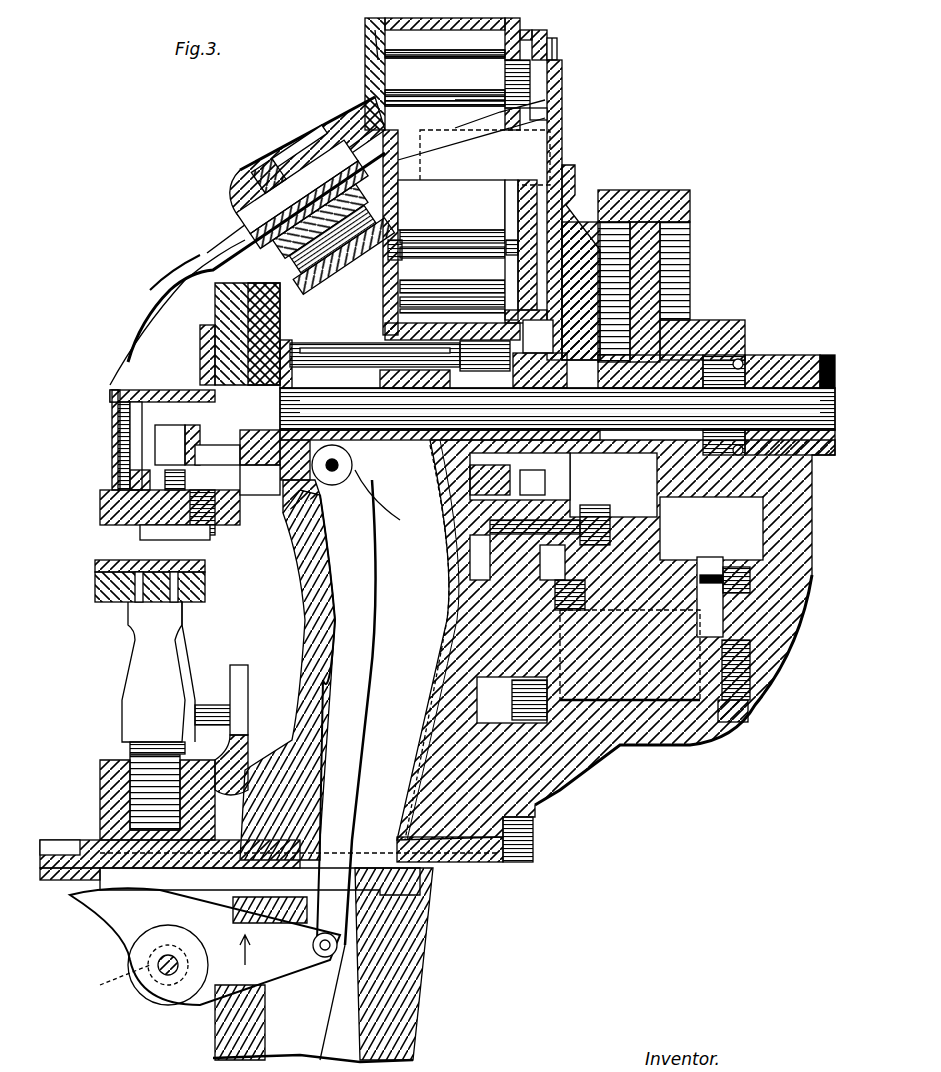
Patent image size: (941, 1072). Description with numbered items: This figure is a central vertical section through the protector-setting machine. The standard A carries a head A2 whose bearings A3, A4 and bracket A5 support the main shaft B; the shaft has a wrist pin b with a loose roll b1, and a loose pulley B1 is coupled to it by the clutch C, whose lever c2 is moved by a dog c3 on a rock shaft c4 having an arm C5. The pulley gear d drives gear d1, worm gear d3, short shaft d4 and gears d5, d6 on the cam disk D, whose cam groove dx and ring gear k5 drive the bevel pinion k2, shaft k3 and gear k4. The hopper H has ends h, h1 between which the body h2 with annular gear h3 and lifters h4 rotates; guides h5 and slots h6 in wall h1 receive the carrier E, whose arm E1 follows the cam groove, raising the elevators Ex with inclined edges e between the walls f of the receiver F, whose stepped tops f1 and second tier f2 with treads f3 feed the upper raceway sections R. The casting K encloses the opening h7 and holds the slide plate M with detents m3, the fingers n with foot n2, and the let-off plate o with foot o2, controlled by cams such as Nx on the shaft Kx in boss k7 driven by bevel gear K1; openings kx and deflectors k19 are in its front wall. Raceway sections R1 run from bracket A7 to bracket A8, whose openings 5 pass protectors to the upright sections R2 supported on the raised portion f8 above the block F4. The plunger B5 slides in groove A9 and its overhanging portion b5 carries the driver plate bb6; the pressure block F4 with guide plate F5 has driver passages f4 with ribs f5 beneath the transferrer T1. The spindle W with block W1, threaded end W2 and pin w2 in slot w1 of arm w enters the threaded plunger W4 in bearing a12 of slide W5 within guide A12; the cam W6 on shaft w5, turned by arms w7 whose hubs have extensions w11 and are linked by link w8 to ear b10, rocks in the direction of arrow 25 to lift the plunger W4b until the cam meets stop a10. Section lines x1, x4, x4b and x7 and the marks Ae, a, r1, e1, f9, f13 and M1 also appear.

The hopper H is at (372, 22).
The stationary upright end h is at (375, 52).
The lifters h4 is at (408, 98).
The cylindrical hopper body h2 is at (450, 26).
The tread portions f3 is at (497, 118).
The opening h7 is at (372, 130).
The annular gear h3 is at (535, 21).
The rear end wall h1 is at (540, 36).
The guides h5 is at (552, 40).
The vertical slots h6 is at (553, 52).
The carrier E is at (560, 100).
The upright separated walls f is at (548, 118).
The depending arm E1 is at (590, 230).
The elevators Ex is at (460, 216).
The pulley B1 is at (672, 192).
The cam disk D is at (692, 245).
The clutch mechanism C is at (712, 356).
The main shaft B is at (780, 390).
The bearing A4 is at (800, 380).
The bevel pinion k2 is at (352, 440).
The bracket or arm A5 is at (790, 620).
The head A2 is at (535, 778).
The bevel gear d is at (560, 460).
The bevel gear d1 is at (520, 472).
The worm gear d3 is at (687, 559).
The short shaft d4 is at (470, 560).
The gear d5 is at (475, 592).
The gear d6 is at (525, 480).
The cam groove dx is at (613, 485).
The lever c2 is at (740, 628).
The dog c3 is at (750, 680).
The rock shaft c4 is at (640, 735).
The arm C5 is at (512, 695).
The link w8 is at (345, 745).
The standard A is at (415, 992).
The bearing A3 is at (380, 442).
The ear b10 is at (345, 490).
The ring gear k5 is at (450, 505).
The vertical groove A9 is at (290, 520).
The bracket A7 is at (240, 285).
The bracket A8 is at (234, 244).
The section line x7 is at (160, 322).
The section line x1 is at (200, 320).
The short shaft Kx is at (215, 300).
The second raceway sections R1 is at (175, 275).
The openings 5 is at (118, 392).
The wrist pin b is at (210, 382).
The overhanging projecting portion b5 is at (175, 427).
The upright raceway sections R2 is at (118, 440).
The pin f13 is at (112, 485).
The raised portion f8 is at (125, 485).
The transferrer T1 is at (112, 490).
The positioning or pressure block F4 is at (102, 512).
The curved guide plate F5 is at (145, 535).
The driver passages f4 is at (175, 535).
The central rib f5 is at (205, 535).
The pin f9 is at (205, 520).
The roll b1 is at (262, 500).
The driver plate bb6 is at (217, 463).
The plunger B5 is at (248, 500).
The block W1 is at (200, 585).
The spindle W is at (145, 672).
The stud or pin w2 is at (217, 705).
The slot w1 is at (245, 672).
The upturned arm w is at (248, 695).
The threaded plunger W4 is at (245, 745).
The threaded end W2 is at (128, 744).
The bearing a12 is at (100, 775).
The guide A12 is at (68, 845).
The slide W5 is at (260, 886).
The cam W6 is at (140, 922).
The threaded plunger W4b is at (98, 888).
The fixed stop a10 is at (115, 918).
The sleeve-like extensions w11 is at (110, 985).
The shaft w5 is at (158, 975).
The arrow 25 is at (256, 947).
The arms w7 is at (305, 965).
The upper raceway sections R is at (305, 132).
The chambered casting K is at (250, 215).
The deflectors k19 is at (235, 185).
The detent member m3 is at (270, 165).
The let-off plate o is at (250, 170).
The section line x4 is at (307, 166).
The openings kx is at (233, 212).
The frame part Ae is at (250, 258).
The slide plate M is at (332, 199).
The section line x4b is at (342, 219).
The armature a is at (350, 236).
The upturned fingers n is at (355, 252).
The depending foot n2 is at (380, 276).
The depending foot o2 is at (388, 334).
The rod r1 is at (398, 124).
The stepped tops f1 is at (471, 130).
The second tier of steps f2 is at (485, 157).
The upper edges e is at (497, 152).
The pin e1 is at (538, 336).
The receiver casting F is at (465, 235).
The bevel gear K1 is at (419, 270).
The magnet core M1 is at (495, 266).
The cam Nx is at (409, 316).
The shaft k3 is at (445, 316).
The gear k4 is at (478, 316).
The boss k7 is at (423, 387).